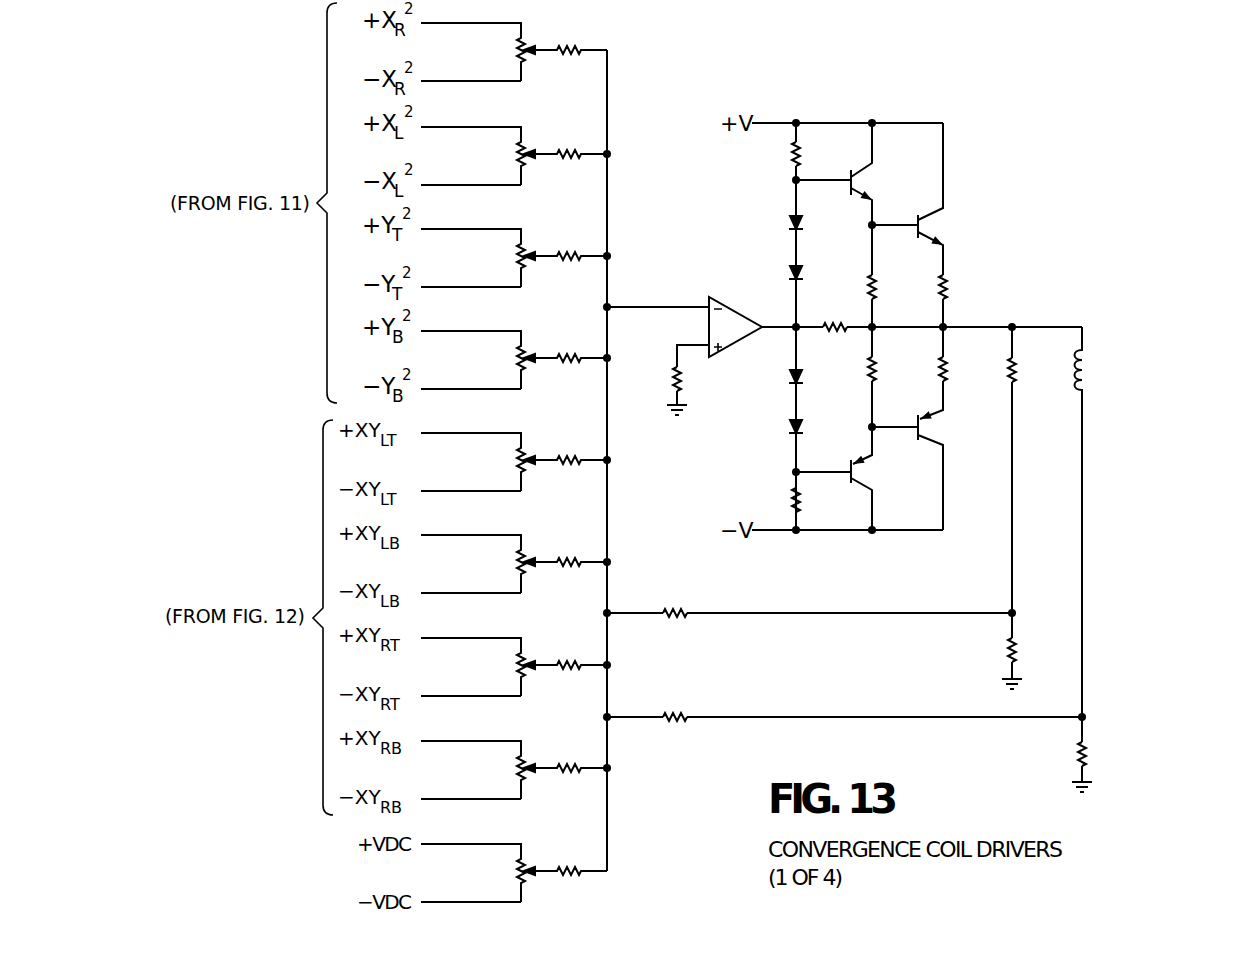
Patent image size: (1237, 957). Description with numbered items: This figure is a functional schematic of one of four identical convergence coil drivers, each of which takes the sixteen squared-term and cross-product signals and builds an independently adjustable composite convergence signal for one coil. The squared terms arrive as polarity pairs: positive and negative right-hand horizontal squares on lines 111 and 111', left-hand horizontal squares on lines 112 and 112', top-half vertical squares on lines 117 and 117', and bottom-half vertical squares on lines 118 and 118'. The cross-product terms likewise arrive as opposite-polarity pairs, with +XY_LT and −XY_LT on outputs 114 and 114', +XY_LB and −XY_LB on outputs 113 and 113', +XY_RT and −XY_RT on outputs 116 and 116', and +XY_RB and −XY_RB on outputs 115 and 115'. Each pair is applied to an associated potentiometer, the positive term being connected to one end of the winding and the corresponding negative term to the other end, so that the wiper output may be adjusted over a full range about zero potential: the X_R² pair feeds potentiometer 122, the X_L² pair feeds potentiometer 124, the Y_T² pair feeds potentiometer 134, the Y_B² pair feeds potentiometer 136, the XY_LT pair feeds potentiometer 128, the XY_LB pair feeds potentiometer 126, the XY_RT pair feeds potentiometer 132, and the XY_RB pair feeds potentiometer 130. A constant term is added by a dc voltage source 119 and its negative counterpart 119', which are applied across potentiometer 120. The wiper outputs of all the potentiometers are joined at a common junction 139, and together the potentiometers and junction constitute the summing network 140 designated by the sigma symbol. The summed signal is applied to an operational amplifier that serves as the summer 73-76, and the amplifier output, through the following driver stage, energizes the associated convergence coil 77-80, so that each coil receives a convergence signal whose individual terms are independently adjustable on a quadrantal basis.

The output line (+X_R²) 111 is at (473, 52).
The output line (−X_R²) 111' is at (471, 67).
The output line (+X_L²) 112 is at (473, 156).
The output line (−X_L²) 112' is at (471, 171).
The output line (+Y_T²) 117 is at (473, 258).
The output line (−Y_T²) 117' is at (471, 273).
The output line (+Y_B²) 118 is at (473, 360).
The output line (−Y_B²) 118' is at (471, 375).
The output (+XY_LT) 114 is at (473, 462).
The output (−XY_LT) 114' is at (471, 477).
The output (+XY_LB) 113 is at (473, 564).
The output (−XY_LB) 113' is at (471, 579).
The output (+XY_RT) 116 is at (473, 667).
The output (−XY_RT) 116' is at (471, 682).
The output (+XY_RB) 115 is at (473, 770).
The output (−XY_RB) 115' is at (471, 785).
The dc voltage source 119 is at (473, 873).
The dc voltage source (negative terminal) 119' is at (471, 888).
The potentiometer 122 is at (564, 34).
The potentiometer 124 is at (564, 138).
The potentiometer 134 is at (564, 240).
The potentiometer 136 is at (564, 342).
The potentiometer 128 is at (564, 444).
The potentiometer 126 is at (564, 546).
The potentiometer 132 is at (564, 649).
The potentiometer 130 is at (564, 752).
The potentiometer 120 is at (564, 855).
The common junction 139 is at (608, 97).
The signal summing network 140 is at (540, 892).
The signal summers 73-76 is at (727, 297).
The convergence coils 77-80 is at (1085, 359).